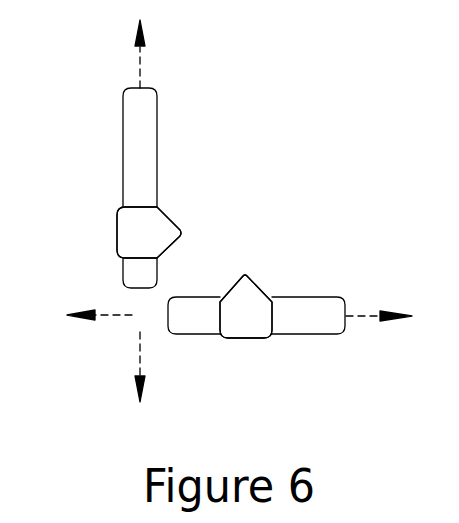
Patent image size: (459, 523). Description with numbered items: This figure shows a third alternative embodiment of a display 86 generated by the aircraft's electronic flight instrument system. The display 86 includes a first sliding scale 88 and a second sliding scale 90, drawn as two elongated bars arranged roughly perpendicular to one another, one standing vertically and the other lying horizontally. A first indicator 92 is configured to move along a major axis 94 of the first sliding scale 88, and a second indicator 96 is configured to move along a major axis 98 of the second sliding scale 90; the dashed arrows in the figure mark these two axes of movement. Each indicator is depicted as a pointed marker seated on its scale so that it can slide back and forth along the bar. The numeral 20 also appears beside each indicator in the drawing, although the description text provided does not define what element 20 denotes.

The display 86 is at (266, 79).
The first sliding scale 88 is at (123, 103).
The second sliding scale 90 is at (347, 303).
The first indicator 92 is at (118, 210).
The major axis 94 is at (142, 60).
The second indicator 96 is at (253, 281).
The major axis 98 is at (365, 318).
The fastener 20 is at (172, 290).